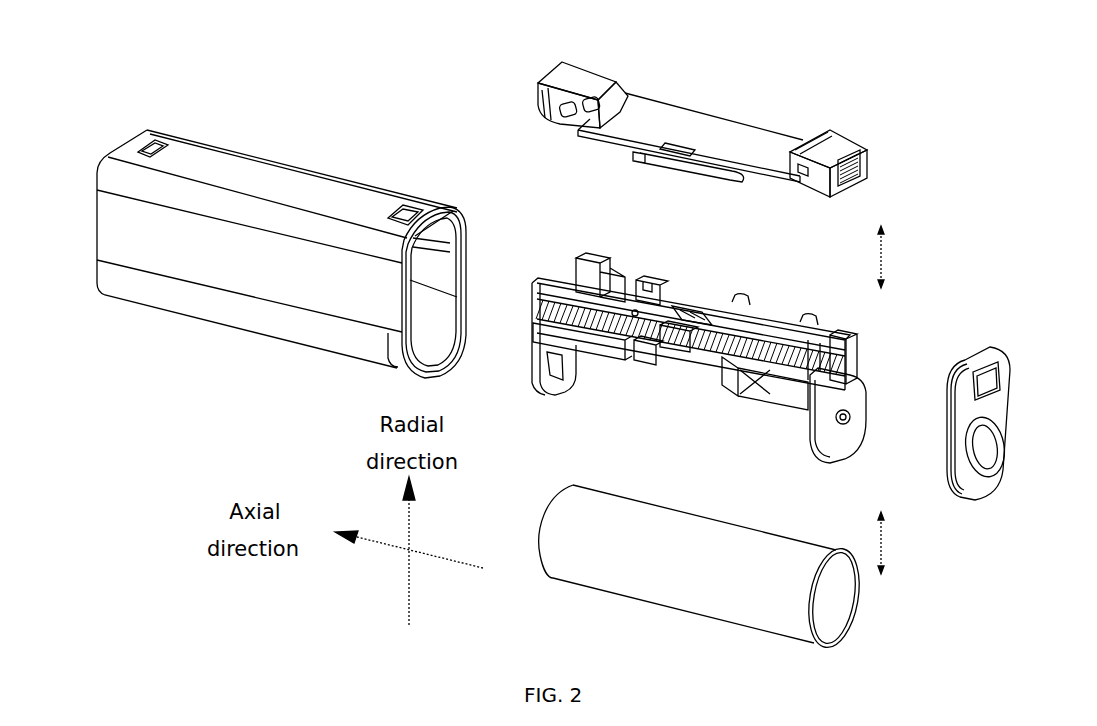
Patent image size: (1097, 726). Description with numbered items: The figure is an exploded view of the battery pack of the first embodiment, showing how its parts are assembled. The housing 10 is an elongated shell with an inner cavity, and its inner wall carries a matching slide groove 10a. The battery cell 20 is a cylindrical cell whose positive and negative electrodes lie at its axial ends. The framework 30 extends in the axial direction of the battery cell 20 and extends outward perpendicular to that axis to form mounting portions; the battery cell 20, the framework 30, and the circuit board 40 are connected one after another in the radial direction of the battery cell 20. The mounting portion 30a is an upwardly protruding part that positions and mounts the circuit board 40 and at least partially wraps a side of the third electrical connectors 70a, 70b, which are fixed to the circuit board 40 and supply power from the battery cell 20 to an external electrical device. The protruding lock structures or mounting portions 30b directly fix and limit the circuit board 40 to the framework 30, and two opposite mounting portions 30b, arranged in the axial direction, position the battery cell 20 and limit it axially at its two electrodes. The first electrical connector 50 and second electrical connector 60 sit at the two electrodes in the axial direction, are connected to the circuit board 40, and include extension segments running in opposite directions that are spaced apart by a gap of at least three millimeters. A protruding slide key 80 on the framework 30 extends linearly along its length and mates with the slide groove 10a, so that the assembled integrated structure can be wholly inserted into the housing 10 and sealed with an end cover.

The housing 10 is at (227, 327).
The slide groove 10a is at (458, 262).
The battery cell 20 is at (683, 611).
The framework 30 is at (772, 318).
The mounting portion 30a is at (600, 254).
The mounting portion (protruding lock structure) 30b is at (741, 296).
The circuit board 40 is at (718, 117).
The first electrical connector 50 is at (638, 278).
The second electrical connector 60 is at (660, 358).
The third electrical connector 70a is at (590, 63).
The third electrical connector 70b is at (838, 140).
The slide key 80 is at (534, 325).